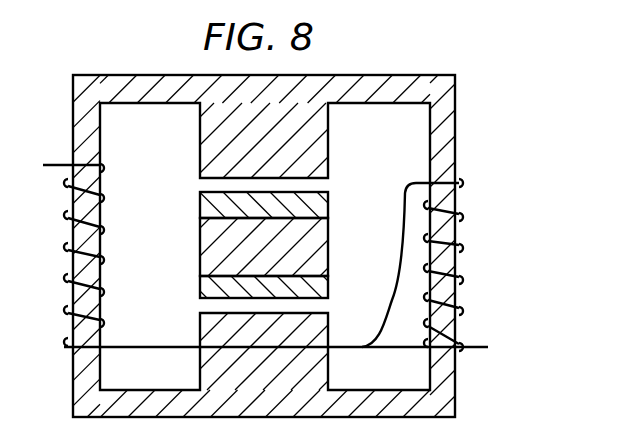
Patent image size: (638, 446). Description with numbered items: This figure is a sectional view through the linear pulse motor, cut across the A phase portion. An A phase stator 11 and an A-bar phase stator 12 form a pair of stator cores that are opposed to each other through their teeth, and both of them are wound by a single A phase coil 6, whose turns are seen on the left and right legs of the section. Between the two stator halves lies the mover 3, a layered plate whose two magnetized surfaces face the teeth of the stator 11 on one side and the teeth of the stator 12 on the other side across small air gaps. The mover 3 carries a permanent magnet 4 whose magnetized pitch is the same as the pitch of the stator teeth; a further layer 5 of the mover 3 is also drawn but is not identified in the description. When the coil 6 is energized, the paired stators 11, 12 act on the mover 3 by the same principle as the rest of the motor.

The A phase stator 11 is at (327, 147).
The A-bar phase stator 12 is at (320, 372).
The permanent magnet 4 is at (322, 203).
The mover 3 is at (318, 238).
The lower layer 5 is at (320, 286).
The A phase coil 6 is at (477, 350).